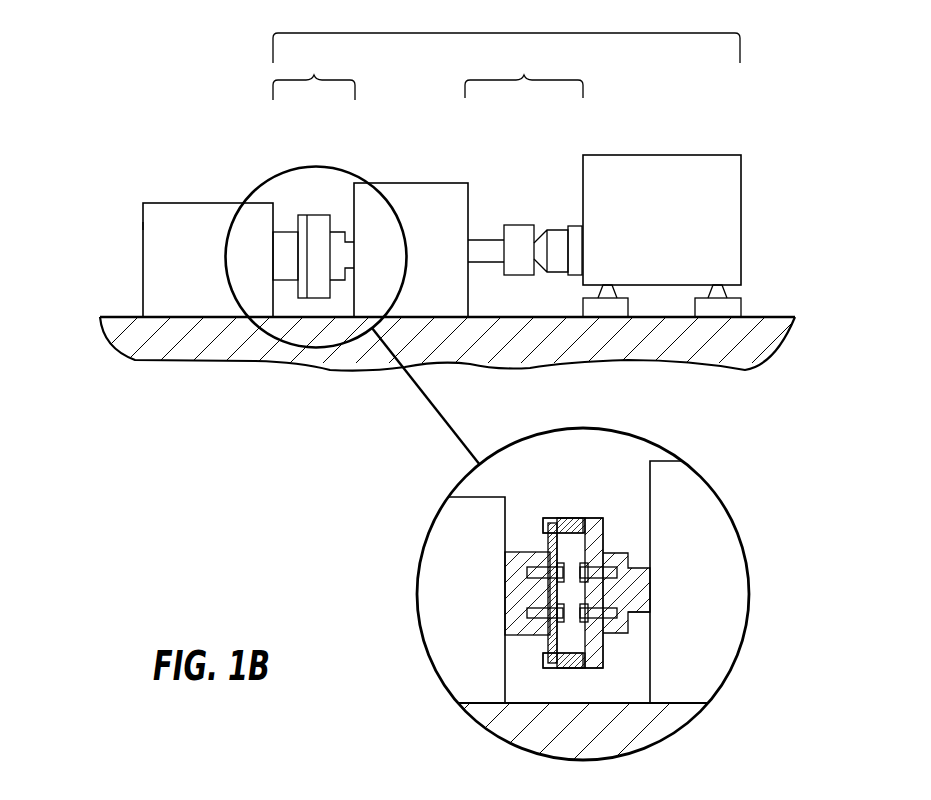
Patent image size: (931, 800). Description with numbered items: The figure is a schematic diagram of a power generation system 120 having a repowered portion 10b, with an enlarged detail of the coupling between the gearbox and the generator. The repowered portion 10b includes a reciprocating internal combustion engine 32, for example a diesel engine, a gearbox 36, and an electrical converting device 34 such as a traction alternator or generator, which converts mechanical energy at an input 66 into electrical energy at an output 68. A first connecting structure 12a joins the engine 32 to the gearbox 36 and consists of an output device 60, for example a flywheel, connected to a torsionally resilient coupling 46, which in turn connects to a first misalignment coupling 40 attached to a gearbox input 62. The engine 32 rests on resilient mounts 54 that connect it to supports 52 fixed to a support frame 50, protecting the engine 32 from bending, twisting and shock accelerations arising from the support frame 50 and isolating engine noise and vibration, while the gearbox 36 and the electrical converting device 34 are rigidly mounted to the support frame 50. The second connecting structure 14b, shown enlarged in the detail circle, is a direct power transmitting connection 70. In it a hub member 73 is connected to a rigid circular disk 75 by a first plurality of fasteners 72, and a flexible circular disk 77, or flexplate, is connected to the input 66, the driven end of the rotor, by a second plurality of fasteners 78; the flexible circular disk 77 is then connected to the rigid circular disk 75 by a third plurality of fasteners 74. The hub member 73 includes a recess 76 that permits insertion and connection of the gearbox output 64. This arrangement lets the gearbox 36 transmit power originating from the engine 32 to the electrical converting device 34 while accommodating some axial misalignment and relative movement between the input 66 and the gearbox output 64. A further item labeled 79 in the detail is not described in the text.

The repowered portion 10b is at (506, 34).
The first connecting structure 12a is at (524, 74).
The second connecting structure 14b is at (314, 75).
The power generation system 120 is at (752, 100).
The reciprocating internal combustion engine 32 is at (722, 172).
The electrical converting device 34 is at (190, 213).
The gearbox 36 is at (423, 187).
The first misalignment coupling 40 is at (520, 237).
The torsionally resilient coupling 46 is at (555, 237).
The support frame 50 is at (124, 317).
The supports 52 is at (605, 310).
The resilient mounts 54 is at (722, 292).
The output device 60 is at (573, 233).
The gearbox input 62 is at (492, 247).
The gearbox output 64 is at (357, 252).
The input 66 is at (290, 230).
The output 68 is at (143, 226).
The direct power transmitting connection 70 is at (329, 178).
The first plurality of fasteners 72 is at (580, 640).
The hub member 73 is at (336, 230).
The third plurality of fasteners 74 is at (540, 660).
The rigid circular disk 75 is at (316, 225).
The recess 76 is at (640, 625).
The flexible circular disk 77 is at (297, 231).
The second plurality of fasteners 78 is at (540, 598).
The pin 79 is at (540, 572).